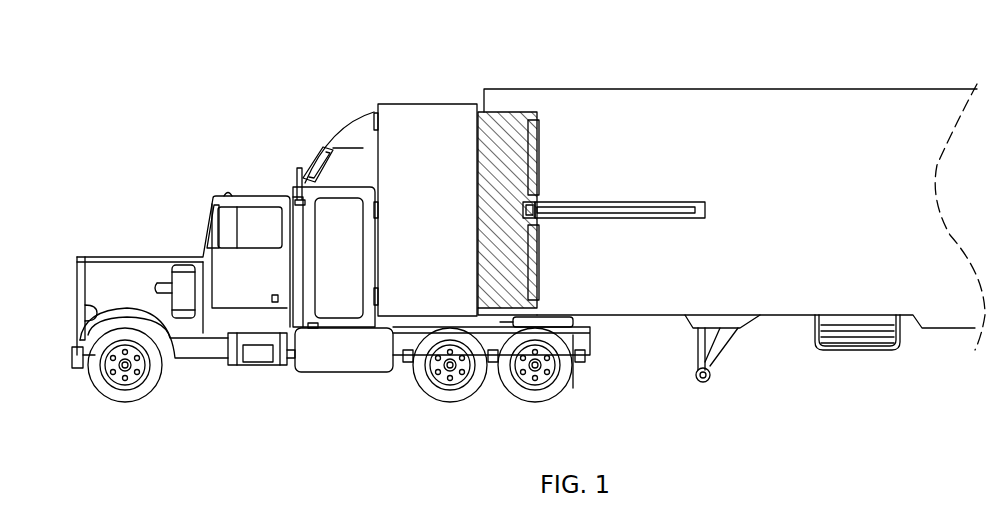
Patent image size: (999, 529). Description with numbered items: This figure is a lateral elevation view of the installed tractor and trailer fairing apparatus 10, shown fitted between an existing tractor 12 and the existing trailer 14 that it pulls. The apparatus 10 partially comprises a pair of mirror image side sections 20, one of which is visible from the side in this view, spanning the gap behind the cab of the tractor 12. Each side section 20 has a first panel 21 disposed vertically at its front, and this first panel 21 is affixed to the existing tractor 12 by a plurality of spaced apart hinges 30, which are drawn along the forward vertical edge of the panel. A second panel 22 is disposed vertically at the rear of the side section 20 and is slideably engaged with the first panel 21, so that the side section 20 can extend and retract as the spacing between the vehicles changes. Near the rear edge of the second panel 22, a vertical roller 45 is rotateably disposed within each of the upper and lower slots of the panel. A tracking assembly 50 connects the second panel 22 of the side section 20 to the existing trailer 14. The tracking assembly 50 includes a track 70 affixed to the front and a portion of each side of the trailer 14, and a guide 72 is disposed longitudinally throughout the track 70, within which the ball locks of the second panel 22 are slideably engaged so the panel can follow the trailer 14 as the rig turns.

The tractor and trailer fairing apparatus 10 is at (642, 82).
The existing tractor 12 is at (213, 325).
The existing trailer 14 is at (775, 300).
The side section 20 is at (408, 325).
The first panel 21 is at (428, 112).
The second panel 22 is at (502, 112).
The hinges 30 is at (374, 121).
The vertical roller 45 is at (540, 130).
The tracking assembly 50 is at (548, 177).
The track 70 is at (647, 220).
The guide 72 is at (677, 207).